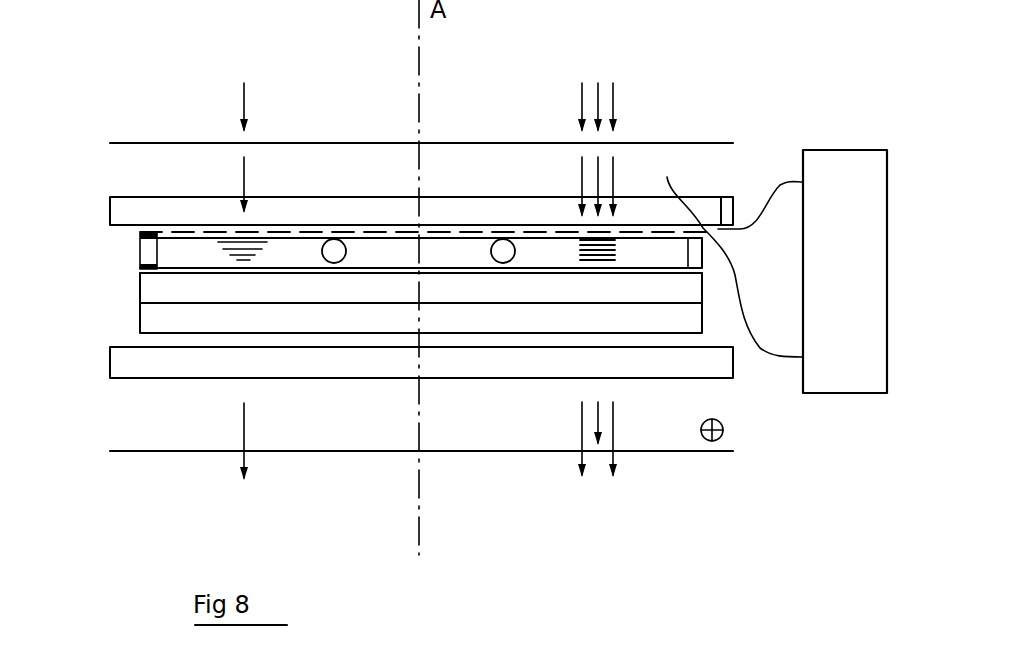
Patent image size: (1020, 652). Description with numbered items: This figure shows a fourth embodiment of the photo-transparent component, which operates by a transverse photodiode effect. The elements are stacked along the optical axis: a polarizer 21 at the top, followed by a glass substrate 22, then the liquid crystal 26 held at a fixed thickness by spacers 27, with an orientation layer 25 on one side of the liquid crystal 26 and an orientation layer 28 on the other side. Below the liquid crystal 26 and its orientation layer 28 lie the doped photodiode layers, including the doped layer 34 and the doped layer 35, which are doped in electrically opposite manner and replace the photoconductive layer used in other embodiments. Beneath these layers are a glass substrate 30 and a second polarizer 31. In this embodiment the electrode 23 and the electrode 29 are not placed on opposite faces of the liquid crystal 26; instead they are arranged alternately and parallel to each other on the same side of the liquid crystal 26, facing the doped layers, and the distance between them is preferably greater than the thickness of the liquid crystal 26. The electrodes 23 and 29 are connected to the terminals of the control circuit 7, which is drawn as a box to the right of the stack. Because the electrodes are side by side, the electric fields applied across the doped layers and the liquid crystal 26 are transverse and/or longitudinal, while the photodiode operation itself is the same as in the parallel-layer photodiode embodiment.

The control circuit 7 is at (837, 378).
The polarizer 21 is at (167, 142).
The glass substrate 22 is at (133, 196).
The uniform electrode 23 is at (721, 226).
The orientation layer 25 is at (140, 236).
The liquid crystal 26 is at (167, 252).
The spacers 27 is at (503, 250).
The orientation layer 28 is at (157, 272).
The uniform electrode 29 is at (642, 228).
The glass substrate 30 is at (138, 367).
The polarizer 31 is at (138, 453).
The doped layer 34 is at (155, 288).
The doped layer 35 is at (153, 323).